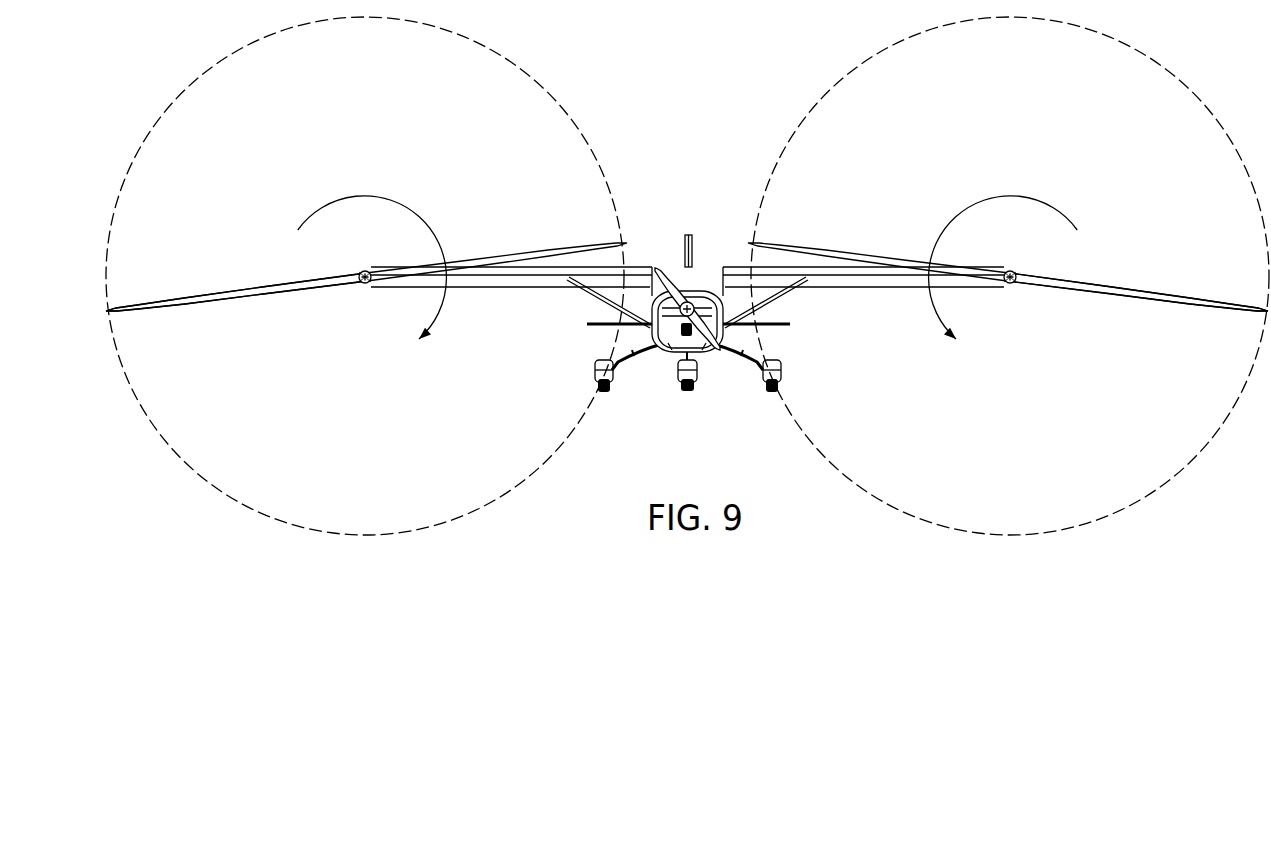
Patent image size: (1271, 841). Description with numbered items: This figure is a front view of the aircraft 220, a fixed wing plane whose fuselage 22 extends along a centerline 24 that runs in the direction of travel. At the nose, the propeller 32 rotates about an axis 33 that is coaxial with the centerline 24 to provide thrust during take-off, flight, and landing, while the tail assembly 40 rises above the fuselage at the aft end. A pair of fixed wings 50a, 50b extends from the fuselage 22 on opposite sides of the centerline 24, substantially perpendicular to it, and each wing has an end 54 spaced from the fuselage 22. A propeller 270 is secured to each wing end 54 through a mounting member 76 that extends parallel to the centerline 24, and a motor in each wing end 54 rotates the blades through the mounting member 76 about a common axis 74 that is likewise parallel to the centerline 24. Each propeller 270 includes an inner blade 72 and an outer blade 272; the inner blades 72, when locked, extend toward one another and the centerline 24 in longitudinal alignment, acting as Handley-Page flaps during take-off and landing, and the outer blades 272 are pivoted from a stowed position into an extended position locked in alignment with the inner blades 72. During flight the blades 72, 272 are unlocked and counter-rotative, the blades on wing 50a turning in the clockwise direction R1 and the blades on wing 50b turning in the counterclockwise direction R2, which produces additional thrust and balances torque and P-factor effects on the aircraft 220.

The aircraft 220 is at (650, 230).
The tail assembly 40 is at (700, 242).
The propeller 32 is at (700, 290).
The fuselage 22 is at (676, 352).
The centerline 24 is at (712, 360).
The axis 33 is at (712, 360).
The fixed wing 50a is at (533, 282).
The fixed wing 50b is at (857, 282).
The inner blade 72 is at (472, 262).
The outer blade 272 is at (208, 294).
The wing end 54 is at (373, 262).
The mounting member 76 is at (362, 272).
The axis 74 is at (360, 286).
The propeller 270 is at (369, 290).
The clockwise direction R1 is at (444, 328).
The counterclockwise direction R2 is at (944, 328).